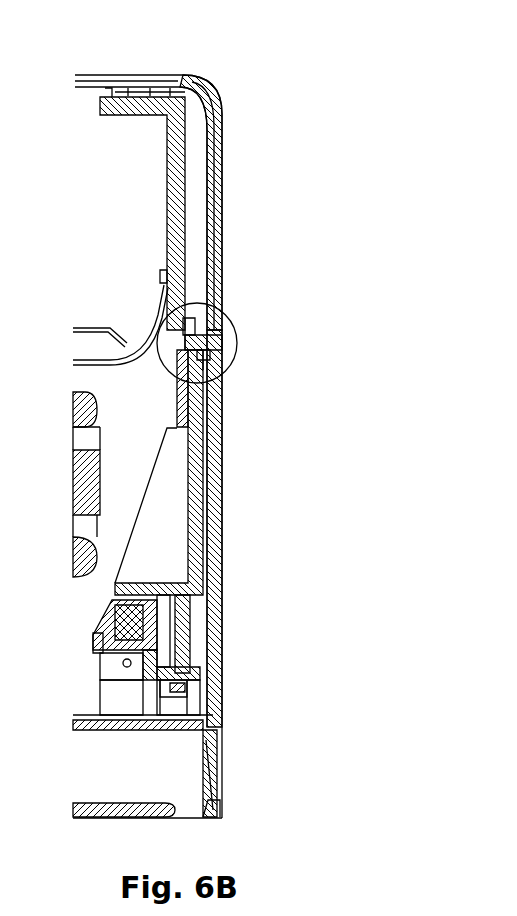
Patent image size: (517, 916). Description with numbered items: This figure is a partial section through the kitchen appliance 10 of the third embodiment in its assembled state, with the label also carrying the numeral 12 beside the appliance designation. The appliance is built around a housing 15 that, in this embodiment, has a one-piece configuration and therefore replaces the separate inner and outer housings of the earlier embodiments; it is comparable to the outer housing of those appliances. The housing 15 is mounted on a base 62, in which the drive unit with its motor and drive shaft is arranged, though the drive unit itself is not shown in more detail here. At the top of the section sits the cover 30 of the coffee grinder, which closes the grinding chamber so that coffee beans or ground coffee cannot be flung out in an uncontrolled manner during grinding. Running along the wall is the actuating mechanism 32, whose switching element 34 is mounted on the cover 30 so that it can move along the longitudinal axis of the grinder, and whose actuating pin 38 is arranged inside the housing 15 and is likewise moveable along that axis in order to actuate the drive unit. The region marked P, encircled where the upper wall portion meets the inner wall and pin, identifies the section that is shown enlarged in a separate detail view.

The kitchen appliance 10 is at (262, 76).
The housing 12 is at (210, 446).
The cover 30 is at (92, 88).
The actuating mechanism 32 is at (213, 456).
The switching element 34 is at (222, 226).
The actuating pin 38 is at (183, 524).
The parting / joint region P is at (232, 361).
The housing 15 is at (222, 680).
The base 62 is at (190, 770).